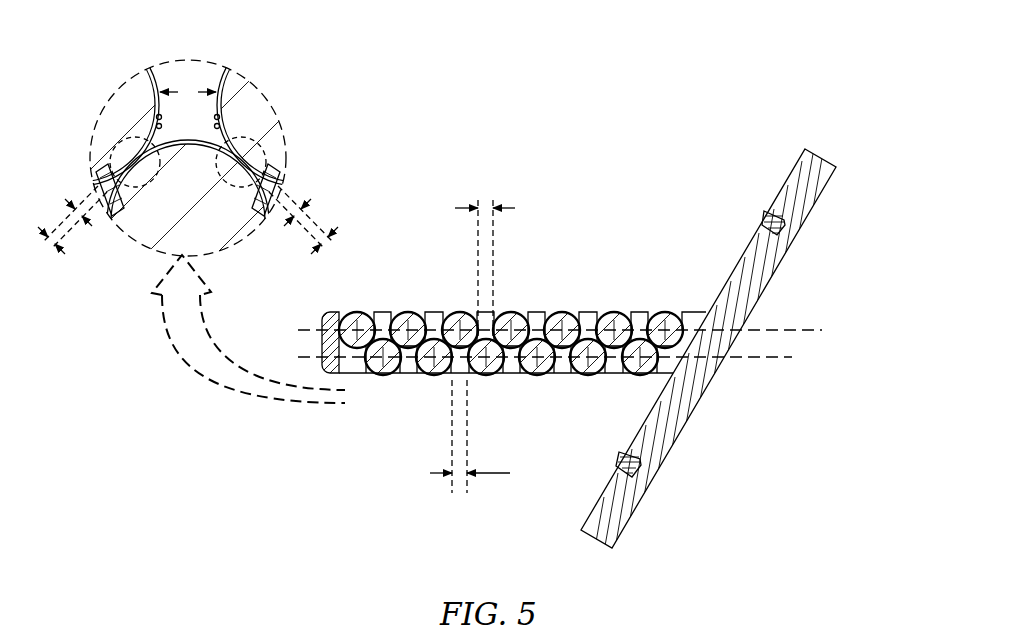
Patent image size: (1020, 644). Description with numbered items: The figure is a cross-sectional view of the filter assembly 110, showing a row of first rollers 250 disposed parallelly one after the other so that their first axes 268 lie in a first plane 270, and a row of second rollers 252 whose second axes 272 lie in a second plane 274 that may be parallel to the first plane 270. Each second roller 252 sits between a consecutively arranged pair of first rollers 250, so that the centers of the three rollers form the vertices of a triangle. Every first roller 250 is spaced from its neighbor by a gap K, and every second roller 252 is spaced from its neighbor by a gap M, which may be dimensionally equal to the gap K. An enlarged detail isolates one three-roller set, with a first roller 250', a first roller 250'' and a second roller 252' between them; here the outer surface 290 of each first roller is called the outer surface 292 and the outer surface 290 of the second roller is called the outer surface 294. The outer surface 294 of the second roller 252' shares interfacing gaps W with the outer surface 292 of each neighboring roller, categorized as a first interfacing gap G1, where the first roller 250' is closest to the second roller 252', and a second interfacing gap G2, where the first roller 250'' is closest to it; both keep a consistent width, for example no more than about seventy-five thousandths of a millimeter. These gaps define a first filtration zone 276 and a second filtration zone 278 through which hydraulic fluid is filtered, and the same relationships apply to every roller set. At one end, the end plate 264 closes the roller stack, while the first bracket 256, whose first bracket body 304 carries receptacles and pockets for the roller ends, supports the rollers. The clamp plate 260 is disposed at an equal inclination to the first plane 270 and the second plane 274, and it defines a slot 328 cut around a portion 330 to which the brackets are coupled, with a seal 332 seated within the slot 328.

The first filter assembly 110 is at (645, 150).
The first rollers 250 is at (421, 194).
The first roller 250' is at (91, 99).
The first roller 250'' is at (291, 99).
The second rollers 252 is at (444, 291).
The second roller 252' is at (94, 162).
The first bracket 256 is at (696, 312).
The clamp plate 260 is at (818, 200).
The end plate 264 is at (322, 345).
The first axes 268 is at (338, 312).
The first plane 270 is at (822, 330).
The second axes 272 is at (388, 376).
The second plane 274 is at (792, 357).
The first filtration zone 276 is at (98, 175).
The second filtration zone 278 is at (278, 175).
The outer surface 290 is at (157, 118).
The outer surface 292 is at (157, 127).
The outer surface 294 is at (248, 240).
The first bracket body 304 is at (358, 375).
The slot 328 is at (784, 228).
The portion 330 is at (650, 410).
The seal 332 is at (766, 213).
The gap K is at (337, 212).
The gap M is at (470, 436).
The first interfacing gap G1 is at (74, 217).
The second interfacing gap G2 is at (301, 217).
The interfacing gaps W is at (187, 240).